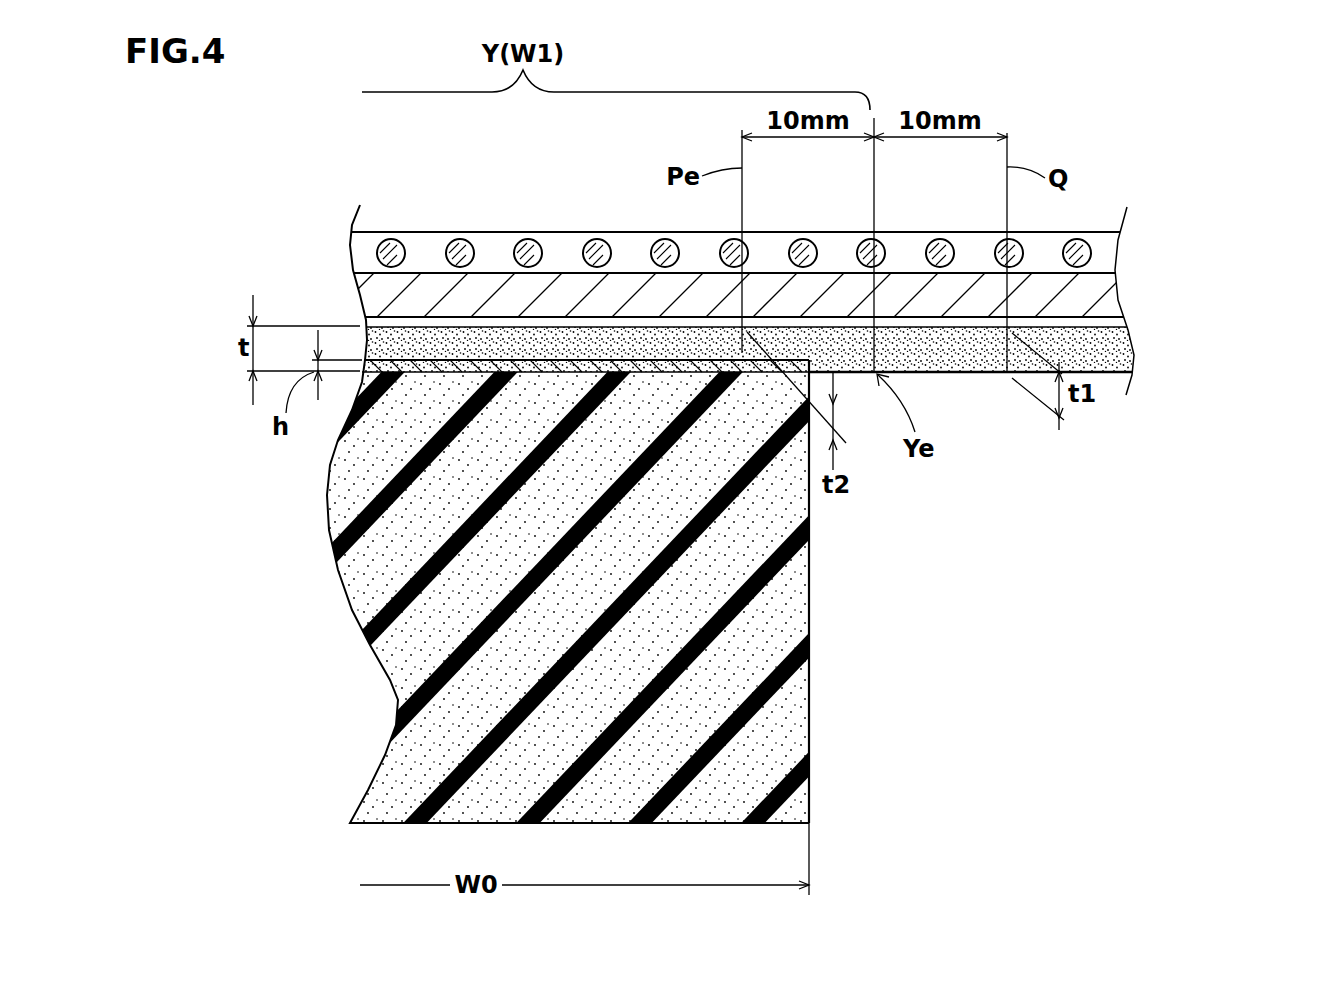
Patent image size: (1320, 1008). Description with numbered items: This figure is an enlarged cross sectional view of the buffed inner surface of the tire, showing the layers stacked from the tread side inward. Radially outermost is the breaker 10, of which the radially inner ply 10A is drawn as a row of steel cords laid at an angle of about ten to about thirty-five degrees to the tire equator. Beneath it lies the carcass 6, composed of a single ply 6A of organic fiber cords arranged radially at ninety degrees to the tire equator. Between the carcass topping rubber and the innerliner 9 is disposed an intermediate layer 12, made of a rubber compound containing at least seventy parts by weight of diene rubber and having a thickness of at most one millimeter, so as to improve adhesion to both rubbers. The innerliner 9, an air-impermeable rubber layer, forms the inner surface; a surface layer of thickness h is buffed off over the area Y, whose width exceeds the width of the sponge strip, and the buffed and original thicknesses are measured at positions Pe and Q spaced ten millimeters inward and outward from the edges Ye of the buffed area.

The innerliner 9 is at (971, 345).
The intermediate layer 12 is at (1105, 323).
The ply 6A is at (1107, 300).
The carcass 6 is at (801, 295).
The breaker 10 is at (1105, 250).
The radially inner ply 10A is at (822, 301).